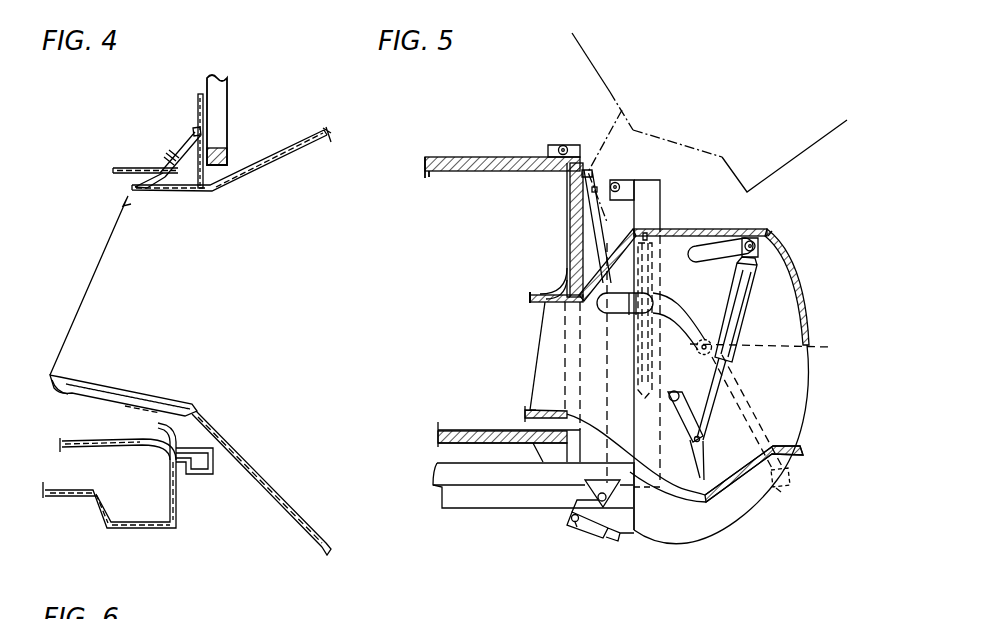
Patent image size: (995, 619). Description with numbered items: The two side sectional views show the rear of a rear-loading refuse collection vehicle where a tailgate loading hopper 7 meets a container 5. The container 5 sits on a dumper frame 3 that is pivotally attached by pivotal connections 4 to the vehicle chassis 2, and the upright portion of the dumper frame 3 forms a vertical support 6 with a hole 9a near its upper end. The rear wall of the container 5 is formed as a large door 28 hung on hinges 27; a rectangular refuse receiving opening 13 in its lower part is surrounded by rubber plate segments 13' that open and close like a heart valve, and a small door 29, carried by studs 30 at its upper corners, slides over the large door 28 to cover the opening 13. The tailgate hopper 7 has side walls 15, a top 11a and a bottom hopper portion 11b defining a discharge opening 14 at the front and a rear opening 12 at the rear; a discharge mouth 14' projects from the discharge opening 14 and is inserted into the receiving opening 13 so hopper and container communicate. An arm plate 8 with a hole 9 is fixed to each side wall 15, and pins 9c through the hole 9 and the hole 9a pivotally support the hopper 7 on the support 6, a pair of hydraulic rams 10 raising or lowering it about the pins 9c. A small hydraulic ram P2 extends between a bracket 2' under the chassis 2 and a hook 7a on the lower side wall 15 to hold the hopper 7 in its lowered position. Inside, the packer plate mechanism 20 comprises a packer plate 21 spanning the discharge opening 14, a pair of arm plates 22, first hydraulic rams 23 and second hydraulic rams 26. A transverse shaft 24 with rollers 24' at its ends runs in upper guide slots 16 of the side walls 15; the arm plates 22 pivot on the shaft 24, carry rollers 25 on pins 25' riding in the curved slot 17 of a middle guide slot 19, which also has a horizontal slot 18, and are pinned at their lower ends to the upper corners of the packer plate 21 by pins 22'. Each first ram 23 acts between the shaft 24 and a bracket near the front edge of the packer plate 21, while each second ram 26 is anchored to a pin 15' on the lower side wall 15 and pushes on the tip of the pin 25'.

In FIG. 5, the vehicle chassis 2 is at (533, 488).
In FIG. 5, the bracket 2' is at (580, 543).
In FIG. 5, the dumper frame 3 is at (470, 478).
In FIG. 5, the pivotal connections 4 is at (593, 497).
In FIG. 5, the container 5 is at (461, 157).
In FIG. 5, the vertical support 6 is at (657, 192).
In FIG. 5, the tailgate loading hopper 7 is at (809, 301).
In FIG. 5, the hook 7a is at (633, 527).
In FIG. 5, the arm plate 8 is at (650, 218).
In FIG. 5, the hole 9 is at (621, 210).
In FIG. 5, the hole 9a is at (612, 178).
In FIG. 5, the pins 9c is at (616, 185).
In FIG. 5, the hydraulic rams 10 is at (642, 357).
In FIG. 5, the top 11a is at (770, 233).
In FIG. 5, the hopper portion 11b is at (776, 490).
In FIG. 5, the rear opening 12 is at (800, 397).
In FIG. 4, the refuse receiving opening 13 is at (231, 142).
In FIG. 5, the refuse receiving opening 13 is at (573, 266).
In FIG. 4, the rubber plate 13' is at (128, 316).
In FIG. 5, the rubber plate 13' is at (514, 324).
In FIG. 4, the discharge opening 14 is at (188, 375).
In FIG. 5, the discharge opening 14 is at (520, 356).
In FIG. 4, the discharge mouth 14' is at (61, 349).
In FIG. 5, the discharge mouth 14' is at (510, 382).
In FIG. 5, the side walls 15 is at (685, 486).
In FIG. 5, the pin 15' is at (808, 464).
In FIG. 5, the upper guide slot 16 is at (720, 252).
In FIG. 5, the curved slot 17 is at (681, 327).
In FIG. 5, the horizontal slot 18 is at (620, 303).
In FIG. 5, the middle guide slot 19 is at (673, 287).
In FIG. 5, the packer plate mechanism 20 is at (742, 359).
In FIG. 5, the packer plate 21 is at (699, 438).
In FIG. 5, the arm plates 22 is at (755, 309).
In FIG. 5, the pins 22' is at (706, 507).
In FIG. 5, the first hydraulic rams 23 is at (740, 295).
In FIG. 5, the transverse shaft 24 is at (802, 210).
In FIG. 5, the roller 24' is at (776, 221).
In FIG. 5, the rollers 25 is at (684, 352).
In FIG. 5, the pins 25' is at (780, 338).
In FIG. 5, the second hydraulic rams 26 is at (745, 408).
In FIG. 5, the hinges 27 is at (557, 149).
In FIG. 5, the large door 28 is at (567, 205).
In FIG. 4, the small door 29 is at (218, 103).
In FIG. 5, the small door 29 is at (568, 226).
In FIG. 5, the studs 30 is at (584, 172).
In FIG. 5, the small hydraulic ram P2 is at (577, 527).